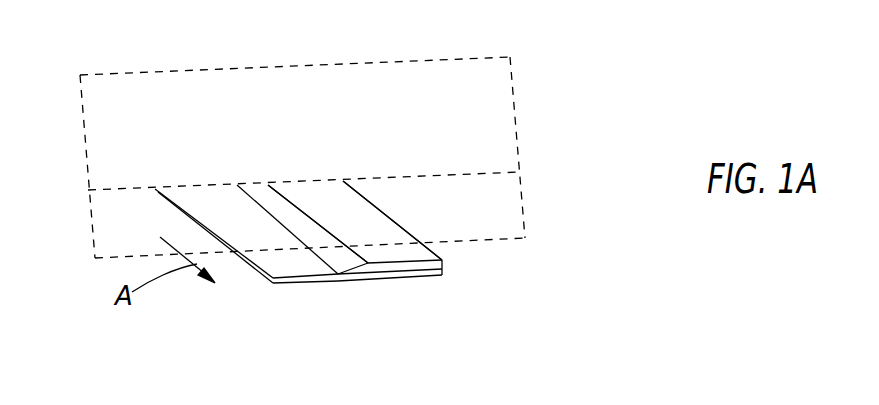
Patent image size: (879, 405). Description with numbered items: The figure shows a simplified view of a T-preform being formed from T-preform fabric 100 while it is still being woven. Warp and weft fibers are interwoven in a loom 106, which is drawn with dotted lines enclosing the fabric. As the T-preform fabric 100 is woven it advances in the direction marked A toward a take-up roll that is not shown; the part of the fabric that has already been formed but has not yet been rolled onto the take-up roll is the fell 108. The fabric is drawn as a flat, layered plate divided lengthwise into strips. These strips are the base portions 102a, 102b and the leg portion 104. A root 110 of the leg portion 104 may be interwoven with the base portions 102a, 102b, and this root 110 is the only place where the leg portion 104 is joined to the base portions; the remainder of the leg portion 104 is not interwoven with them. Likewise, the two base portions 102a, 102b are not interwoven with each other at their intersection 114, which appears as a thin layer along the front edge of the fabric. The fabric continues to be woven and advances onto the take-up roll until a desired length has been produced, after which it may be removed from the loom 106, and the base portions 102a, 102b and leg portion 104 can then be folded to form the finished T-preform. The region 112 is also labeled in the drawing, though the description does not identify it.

The T-preform fabric 100 is at (138, 211).
The base portion 102a is at (397, 242).
The base portion 102b is at (420, 278).
The leg portion 104 is at (300, 267).
The loom 106 is at (432, 103).
The fell 108 is at (358, 192).
The root 110 is at (340, 273).
The second layer 112 is at (405, 268).
The intersection 114 is at (440, 267).